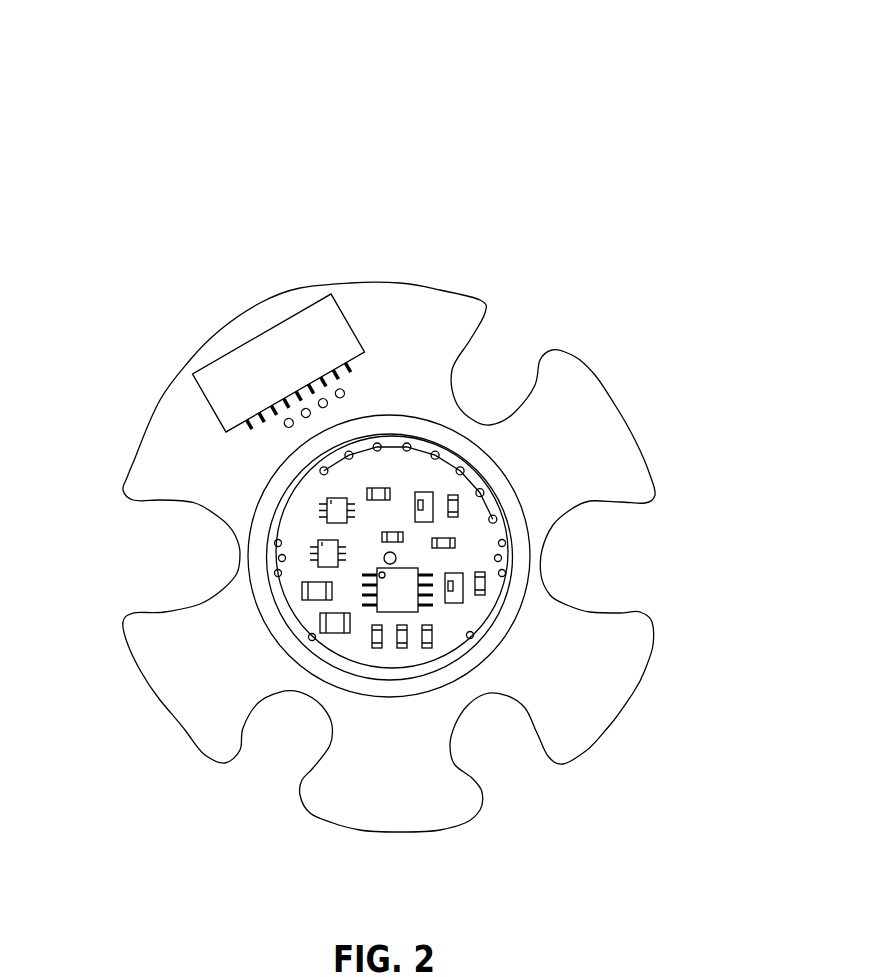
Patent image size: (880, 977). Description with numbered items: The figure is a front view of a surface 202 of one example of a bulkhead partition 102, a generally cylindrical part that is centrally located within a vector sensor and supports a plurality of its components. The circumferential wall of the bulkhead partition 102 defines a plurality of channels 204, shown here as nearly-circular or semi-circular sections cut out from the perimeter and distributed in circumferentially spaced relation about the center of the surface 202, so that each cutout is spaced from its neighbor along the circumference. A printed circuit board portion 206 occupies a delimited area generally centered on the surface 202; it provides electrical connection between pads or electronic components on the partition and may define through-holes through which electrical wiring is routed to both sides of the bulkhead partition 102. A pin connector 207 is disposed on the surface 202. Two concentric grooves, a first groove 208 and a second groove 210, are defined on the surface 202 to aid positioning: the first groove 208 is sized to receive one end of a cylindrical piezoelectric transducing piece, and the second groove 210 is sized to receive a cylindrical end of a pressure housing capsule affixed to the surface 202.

The bulkhead partition 102 is at (376, 120).
The surface 202 is at (160, 452).
The channels 204 is at (632, 558).
The printed circuit board portion 206 is at (450, 625).
The pin connector 207 is at (277, 348).
The first groove 208 is at (273, 602).
The second groove 210 is at (317, 677).